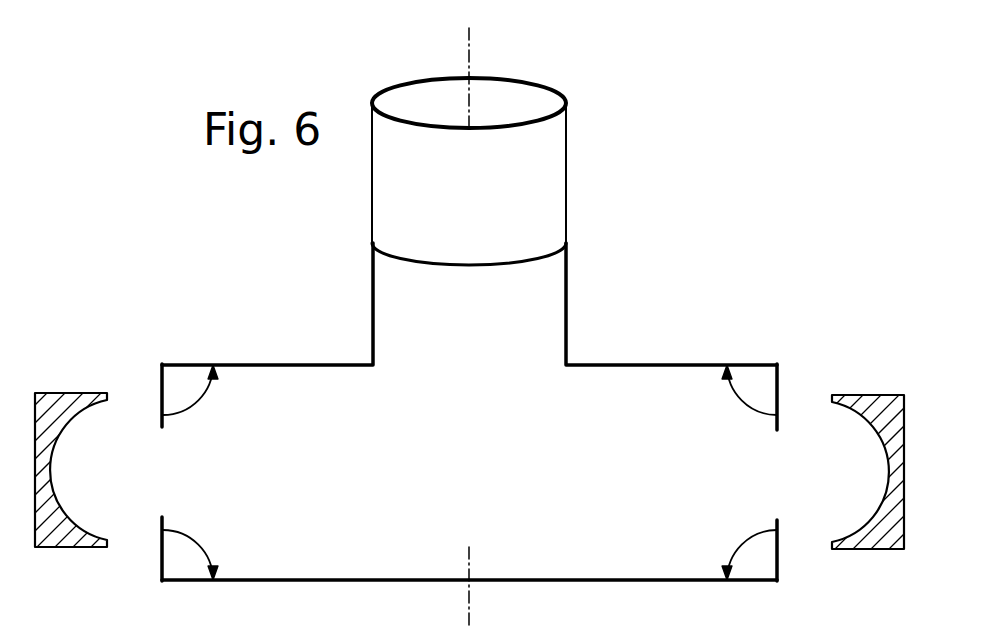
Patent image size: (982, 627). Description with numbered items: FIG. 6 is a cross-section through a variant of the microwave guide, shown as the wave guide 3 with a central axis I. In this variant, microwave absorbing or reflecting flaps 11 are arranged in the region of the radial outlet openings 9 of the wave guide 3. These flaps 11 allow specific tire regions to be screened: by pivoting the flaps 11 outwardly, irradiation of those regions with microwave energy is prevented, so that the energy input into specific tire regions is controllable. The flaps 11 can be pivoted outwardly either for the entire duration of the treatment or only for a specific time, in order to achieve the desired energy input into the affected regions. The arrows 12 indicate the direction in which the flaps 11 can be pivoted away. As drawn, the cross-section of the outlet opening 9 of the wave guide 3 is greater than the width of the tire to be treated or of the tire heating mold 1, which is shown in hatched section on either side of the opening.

The tire heating mold 1 is at (53, 408).
The wave guide 3 is at (545, 180).
The radial outlet opening 9 is at (158, 463).
The microwave absorbing or reflecting flaps 11 is at (162, 388).
The arrows 12 is at (190, 408).
The central axis I is at (469, 53).